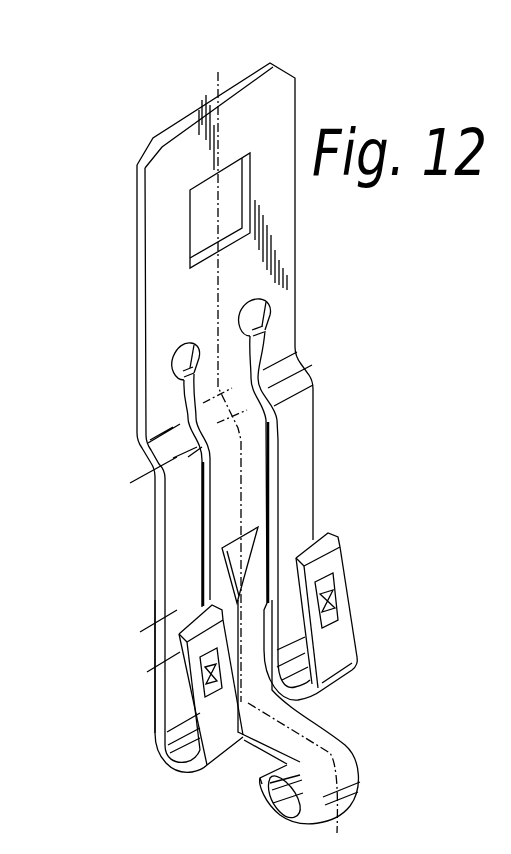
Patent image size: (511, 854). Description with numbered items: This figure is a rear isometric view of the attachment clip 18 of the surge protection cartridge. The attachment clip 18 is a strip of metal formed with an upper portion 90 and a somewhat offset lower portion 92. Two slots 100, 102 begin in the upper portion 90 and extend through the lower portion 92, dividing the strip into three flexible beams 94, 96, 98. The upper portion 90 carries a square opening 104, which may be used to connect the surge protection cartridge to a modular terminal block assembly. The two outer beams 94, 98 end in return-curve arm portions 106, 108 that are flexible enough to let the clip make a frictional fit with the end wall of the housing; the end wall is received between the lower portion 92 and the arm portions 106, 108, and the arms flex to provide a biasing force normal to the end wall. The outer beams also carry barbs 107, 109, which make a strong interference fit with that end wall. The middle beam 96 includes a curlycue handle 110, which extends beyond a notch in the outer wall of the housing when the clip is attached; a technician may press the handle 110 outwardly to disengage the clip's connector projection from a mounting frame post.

The attachment clip 18 is at (136, 146).
The upper portion 90 is at (173, 311).
The lower portion 92 is at (181, 516).
The flexible beam 94 is at (305, 527).
The middle beam 96 is at (178, 625).
The flexible beam 98 is at (167, 583).
The slot 100 is at (273, 434).
The slot 102 is at (195, 480).
The square opening 104 is at (201, 222).
The return-curve arm portion 106 is at (337, 632).
The barb 107 is at (340, 596).
The return-curve arm portion 108 is at (203, 716).
The barb 109 is at (200, 681).
The curlycue handle 110 is at (330, 752).